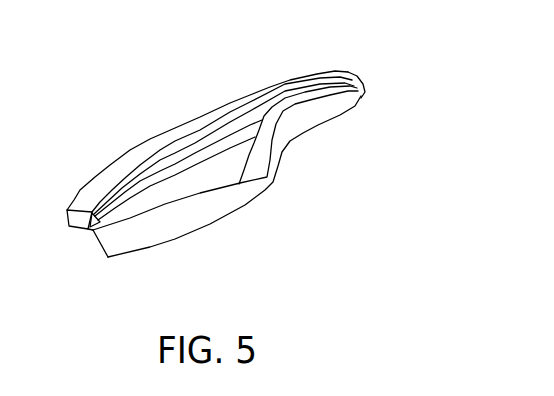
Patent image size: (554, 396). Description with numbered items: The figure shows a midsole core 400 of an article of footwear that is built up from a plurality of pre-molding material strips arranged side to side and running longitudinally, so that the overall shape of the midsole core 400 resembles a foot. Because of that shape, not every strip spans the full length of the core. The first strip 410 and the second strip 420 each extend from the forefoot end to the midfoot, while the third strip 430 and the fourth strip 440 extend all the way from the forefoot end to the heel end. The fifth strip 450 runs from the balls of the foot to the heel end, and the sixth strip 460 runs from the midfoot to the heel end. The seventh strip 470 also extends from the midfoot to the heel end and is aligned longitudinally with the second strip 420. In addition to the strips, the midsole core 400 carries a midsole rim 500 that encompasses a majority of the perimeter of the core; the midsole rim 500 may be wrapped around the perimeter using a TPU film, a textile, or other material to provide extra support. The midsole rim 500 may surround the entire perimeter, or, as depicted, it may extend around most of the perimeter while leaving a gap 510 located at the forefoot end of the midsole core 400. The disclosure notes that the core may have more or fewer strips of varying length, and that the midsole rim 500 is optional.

The midsole core 400 is at (318, 237).
The first strip 410 is at (240, 160).
The second strip 420 is at (162, 198).
The third strip 430 is at (117, 198).
The fourth strip 440 is at (154, 165).
The fifth strip 450 is at (197, 132).
The sixth strip 460 is at (230, 103).
The seventh strip 470 is at (360, 98).
The midsole rim 500 is at (216, 207).
The gap 510 is at (87, 234).